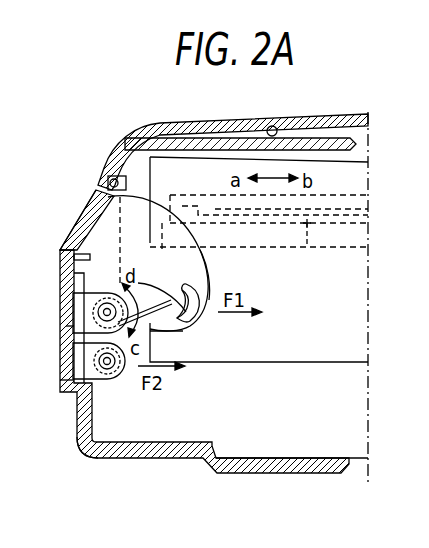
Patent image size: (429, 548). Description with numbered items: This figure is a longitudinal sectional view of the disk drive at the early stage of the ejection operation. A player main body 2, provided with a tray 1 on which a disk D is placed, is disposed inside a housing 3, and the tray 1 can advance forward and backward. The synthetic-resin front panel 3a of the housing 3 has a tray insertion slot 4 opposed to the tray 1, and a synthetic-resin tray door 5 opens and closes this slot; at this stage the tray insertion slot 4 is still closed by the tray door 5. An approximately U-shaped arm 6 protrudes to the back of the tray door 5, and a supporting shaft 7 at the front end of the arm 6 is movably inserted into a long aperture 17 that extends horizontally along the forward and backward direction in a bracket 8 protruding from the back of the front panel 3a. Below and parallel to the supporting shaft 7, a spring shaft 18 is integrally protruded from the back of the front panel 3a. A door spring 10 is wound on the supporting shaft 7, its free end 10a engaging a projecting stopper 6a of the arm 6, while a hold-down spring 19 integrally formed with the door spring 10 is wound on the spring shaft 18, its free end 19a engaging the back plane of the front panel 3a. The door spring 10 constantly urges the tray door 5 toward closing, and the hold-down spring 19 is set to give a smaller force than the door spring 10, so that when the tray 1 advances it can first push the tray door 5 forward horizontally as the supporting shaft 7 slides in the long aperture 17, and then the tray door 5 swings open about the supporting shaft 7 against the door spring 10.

The tray 1 is at (307, 247).
The player main body 2 is at (303, 340).
The housing 3 is at (150, 460).
The front panel 3a is at (82, 446).
The tray insertion slot 4 is at (124, 184).
The tray door 5 is at (86, 198).
The arm 6 is at (198, 318).
The projecting stopper 6a is at (178, 322).
The supporting shaft 7 is at (115, 240).
The bracket 8 is at (100, 296).
The door spring 10 is at (85, 312).
The free end 10a is at (206, 262).
The long aperture 17 is at (66, 329).
The spring shaft 18 is at (107, 380).
The hold-down spring 19 is at (113, 378).
The free end 19a is at (66, 370).
The disk D is at (272, 213).